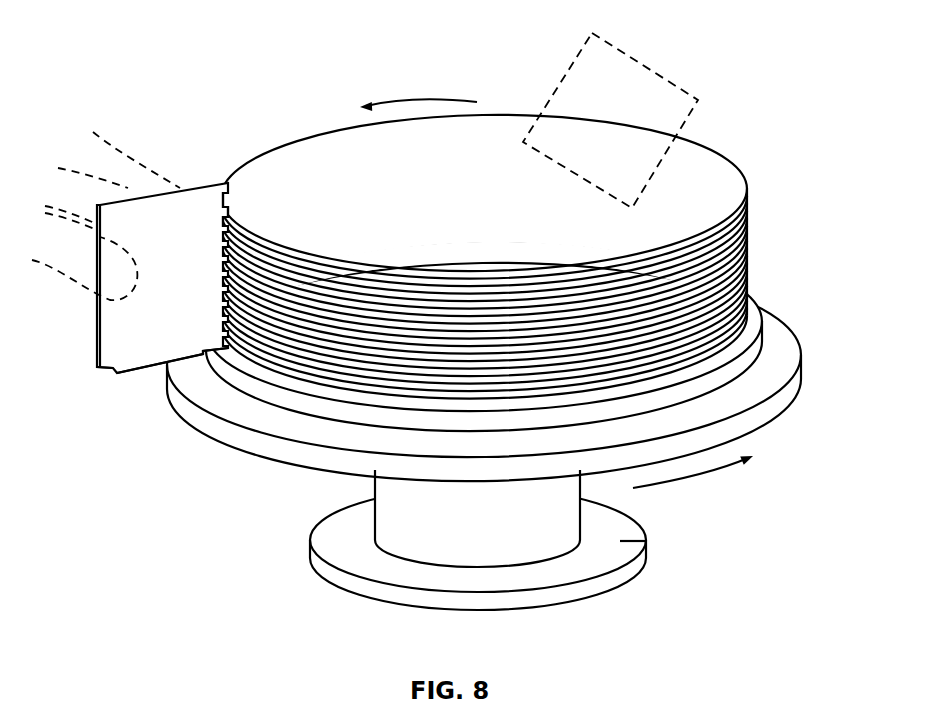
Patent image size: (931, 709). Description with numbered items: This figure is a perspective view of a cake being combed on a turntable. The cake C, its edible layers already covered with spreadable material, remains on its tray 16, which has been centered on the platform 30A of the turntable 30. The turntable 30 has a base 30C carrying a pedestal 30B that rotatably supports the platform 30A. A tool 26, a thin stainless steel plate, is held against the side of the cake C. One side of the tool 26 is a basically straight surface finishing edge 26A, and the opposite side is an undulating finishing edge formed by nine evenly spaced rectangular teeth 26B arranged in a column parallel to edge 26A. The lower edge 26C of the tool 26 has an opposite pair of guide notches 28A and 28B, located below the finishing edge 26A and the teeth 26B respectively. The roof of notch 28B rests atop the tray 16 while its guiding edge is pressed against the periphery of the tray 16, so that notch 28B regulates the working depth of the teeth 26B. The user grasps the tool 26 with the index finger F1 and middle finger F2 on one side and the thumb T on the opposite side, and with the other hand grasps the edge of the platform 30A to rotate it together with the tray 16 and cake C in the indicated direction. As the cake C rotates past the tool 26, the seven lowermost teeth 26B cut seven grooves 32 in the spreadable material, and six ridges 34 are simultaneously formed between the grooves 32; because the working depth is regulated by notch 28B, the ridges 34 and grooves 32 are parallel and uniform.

The tray 16 is at (760, 348).
The tool 26 is at (356, 270).
The surface finishing edge 26A is at (97, 338).
The rectangular teeth 26B is at (231, 207).
The lower edge 26C is at (121, 376).
The guide notch 28A is at (104, 374).
The guide notch 28B is at (204, 357).
The turntable 30 is at (356, 602).
The platform 30A is at (805, 370).
The pedestal 30B is at (374, 483).
The base 30C is at (646, 556).
The grooves 32 is at (748, 265).
The ridges 34 is at (748, 233).
The cake C is at (716, 152).
The thumb T is at (57, 278).
The index finger F1 is at (101, 128).
The middle finger F2 is at (117, 188).